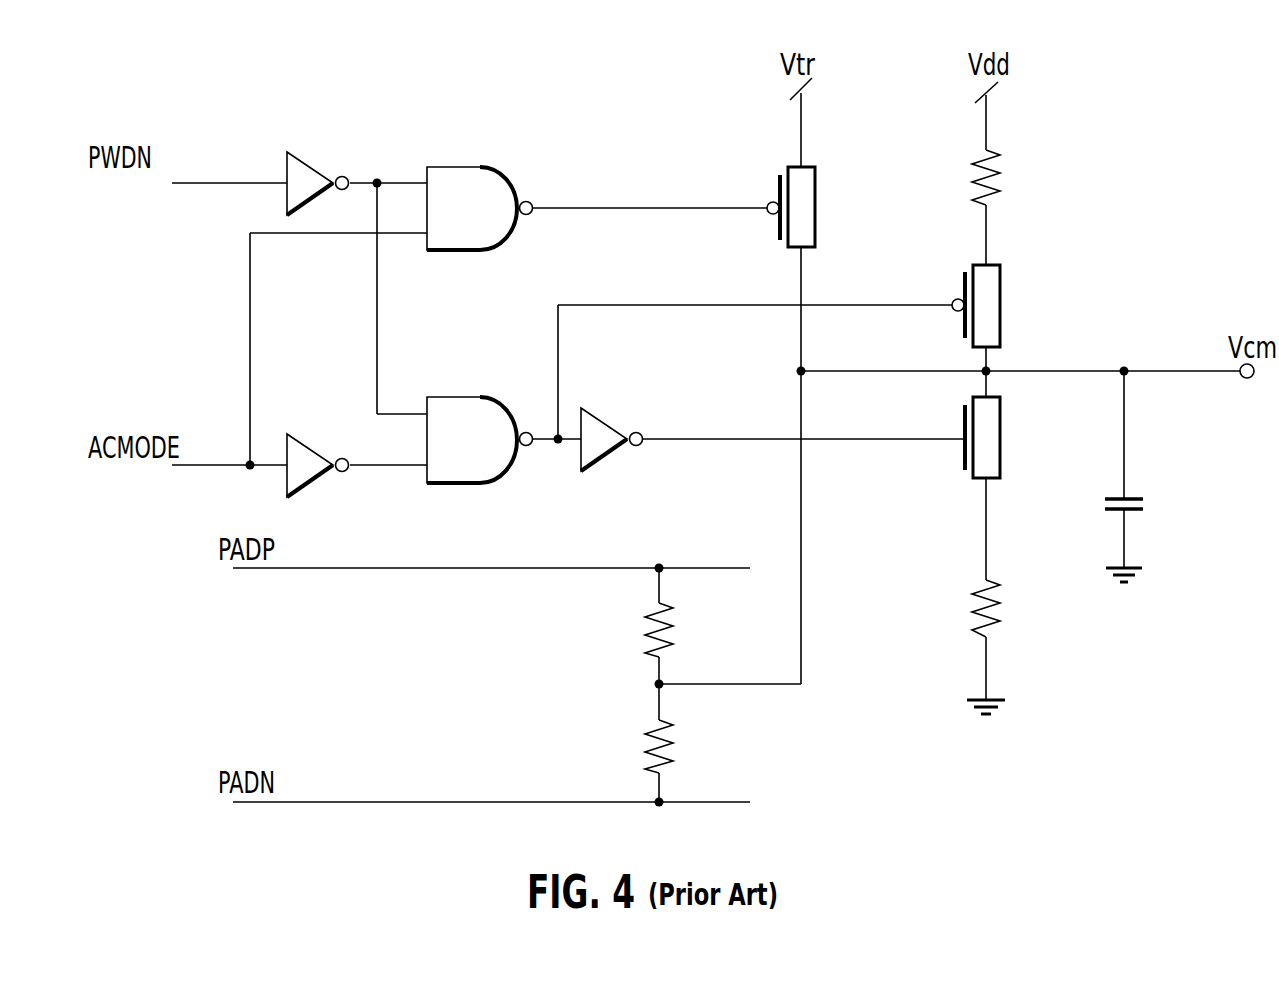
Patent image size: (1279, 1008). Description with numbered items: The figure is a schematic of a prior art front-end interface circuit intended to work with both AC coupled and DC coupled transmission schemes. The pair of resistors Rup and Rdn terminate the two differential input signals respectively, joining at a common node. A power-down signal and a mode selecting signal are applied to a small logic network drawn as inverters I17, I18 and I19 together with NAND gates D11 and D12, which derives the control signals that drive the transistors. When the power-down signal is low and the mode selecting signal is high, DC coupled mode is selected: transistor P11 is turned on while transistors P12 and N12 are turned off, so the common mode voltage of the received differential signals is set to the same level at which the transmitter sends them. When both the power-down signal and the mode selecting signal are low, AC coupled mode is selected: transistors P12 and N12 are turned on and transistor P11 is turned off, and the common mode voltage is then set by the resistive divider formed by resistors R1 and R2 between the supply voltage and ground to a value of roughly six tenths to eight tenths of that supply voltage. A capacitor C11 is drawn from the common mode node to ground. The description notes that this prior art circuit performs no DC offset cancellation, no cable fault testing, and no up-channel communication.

The inverter I17 is at (305, 173).
The inverter I18 is at (305, 455).
The inverter I19 is at (598, 428).
The NAND gate D11 is at (470, 183).
The NAND gate D12 is at (470, 413).
The transistor P11 is at (817, 185).
The transistor P12 is at (1003, 272).
The transistor N12 is at (1000, 465).
The resistor R1 is at (1000, 176).
The resistor R2 is at (1000, 600).
The resistor Rup is at (648, 630).
The resistor Rdn is at (648, 748).
The capacitor C11 is at (1143, 508).